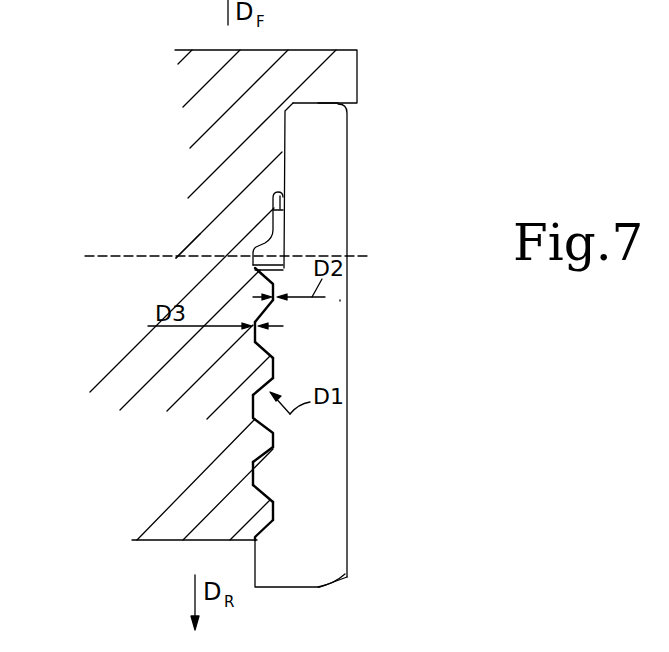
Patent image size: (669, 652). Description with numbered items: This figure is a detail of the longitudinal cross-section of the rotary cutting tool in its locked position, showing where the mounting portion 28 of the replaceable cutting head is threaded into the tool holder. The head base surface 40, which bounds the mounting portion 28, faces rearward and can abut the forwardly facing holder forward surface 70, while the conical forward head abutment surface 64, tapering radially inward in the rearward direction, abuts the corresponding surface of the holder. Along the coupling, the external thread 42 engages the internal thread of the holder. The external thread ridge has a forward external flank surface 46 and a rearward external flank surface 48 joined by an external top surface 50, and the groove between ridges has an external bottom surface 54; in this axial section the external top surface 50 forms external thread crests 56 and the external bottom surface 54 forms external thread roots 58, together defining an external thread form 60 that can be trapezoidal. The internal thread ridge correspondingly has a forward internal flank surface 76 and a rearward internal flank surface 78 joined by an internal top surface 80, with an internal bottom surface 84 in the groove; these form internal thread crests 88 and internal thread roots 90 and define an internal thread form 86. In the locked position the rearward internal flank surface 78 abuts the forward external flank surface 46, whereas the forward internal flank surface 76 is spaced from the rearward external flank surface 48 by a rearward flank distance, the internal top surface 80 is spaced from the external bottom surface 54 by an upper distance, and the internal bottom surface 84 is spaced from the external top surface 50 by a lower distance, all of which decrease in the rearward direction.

The mounting portion 28 is at (177, 105).
The head base surface 40 is at (330, 105).
The external thread 42 is at (89, 457).
The forward external flank surface 46 is at (273, 486).
The rearward external flank surface 48 is at (262, 325).
The external top surface 50 is at (273, 357).
The external bottom surface 54 is at (257, 333).
The external thread crests 56 is at (277, 514).
The external thread roots 58 is at (256, 478).
The external thread form 60 is at (188, 370).
The forward head abutment surface 64 is at (284, 152).
The holder forward surface 70 is at (318, 103).
The forward internal flank surface 76 is at (270, 304).
The rearward internal flank surface 78 is at (270, 487).
The internal top surface 80 is at (250, 330).
The internal bottom surface 84 is at (263, 371).
The internal thread form 86 is at (323, 438).
The internal thread crests 88 is at (275, 513).
The internal thread roots 90 is at (283, 132).